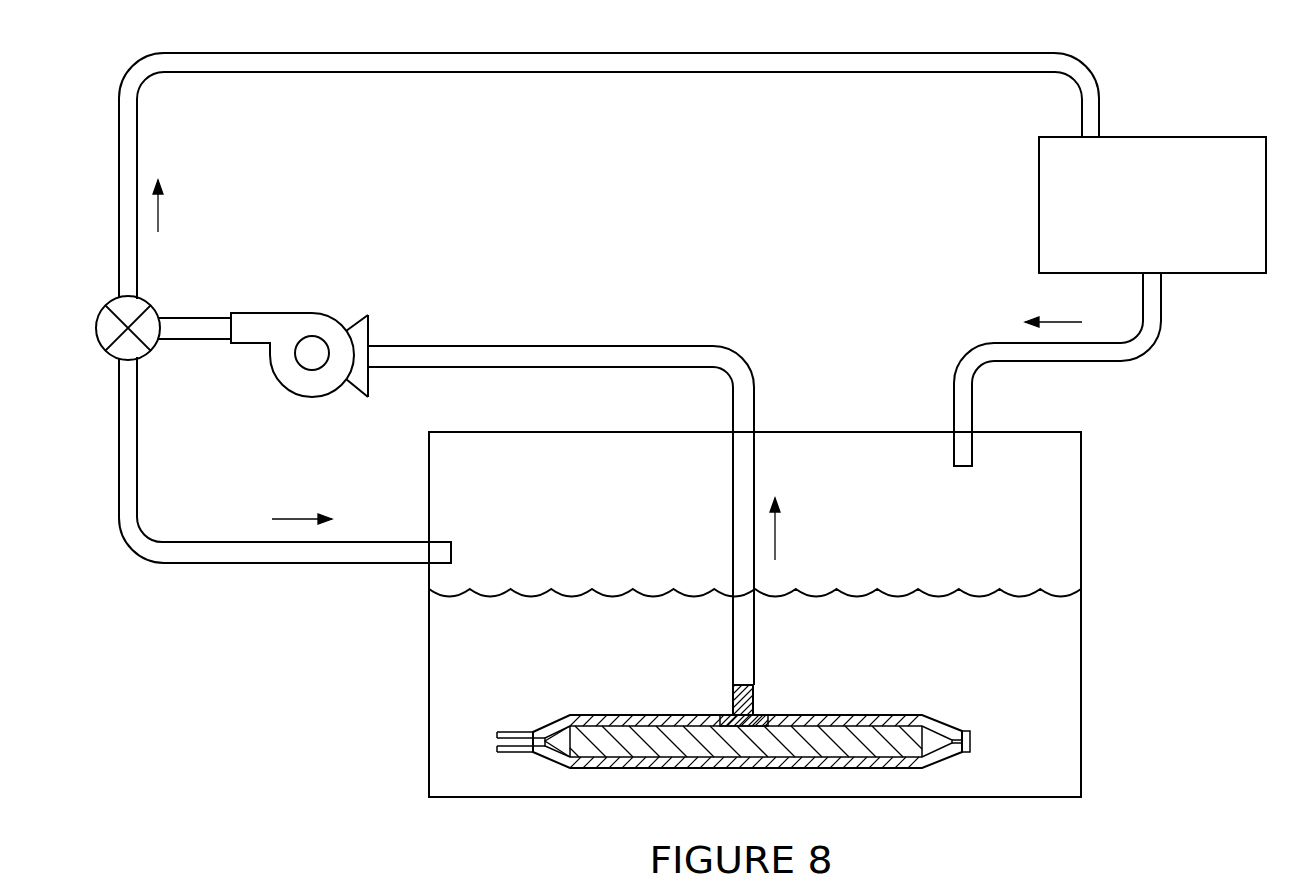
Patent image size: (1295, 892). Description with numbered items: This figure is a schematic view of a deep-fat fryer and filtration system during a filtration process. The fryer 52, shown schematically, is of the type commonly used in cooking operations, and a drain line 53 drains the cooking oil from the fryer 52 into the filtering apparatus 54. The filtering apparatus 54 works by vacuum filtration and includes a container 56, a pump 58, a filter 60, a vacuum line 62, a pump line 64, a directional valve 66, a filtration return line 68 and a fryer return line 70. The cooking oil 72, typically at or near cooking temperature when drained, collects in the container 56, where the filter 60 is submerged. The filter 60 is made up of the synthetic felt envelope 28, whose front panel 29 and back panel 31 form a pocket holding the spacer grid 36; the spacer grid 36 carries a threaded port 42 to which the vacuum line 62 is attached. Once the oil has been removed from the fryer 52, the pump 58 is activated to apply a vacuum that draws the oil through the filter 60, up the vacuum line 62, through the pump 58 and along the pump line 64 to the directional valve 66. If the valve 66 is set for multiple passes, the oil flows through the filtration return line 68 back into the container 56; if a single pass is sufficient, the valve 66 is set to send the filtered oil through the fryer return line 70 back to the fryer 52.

The filter envelope 28 is at (975, 734).
The front panel 29 is at (600, 711).
The back panel 31 is at (842, 770).
The spacer grid 36 is at (622, 752).
The threaded port 42 is at (752, 682).
The fryer 52 is at (1211, 133).
The drain line 53 is at (1164, 297).
The filtering apparatus 54 is at (300, 700).
The container 56 is at (1085, 458).
The pump 58 is at (330, 310).
The filter 60 is at (953, 661).
The vacuum line 62 is at (733, 623).
The pump line 64 is at (181, 309).
The directional valve 66 is at (154, 354).
The filtration return line 68 is at (138, 450).
The fryer return line 70 is at (739, 52).
The cooking oil 72 is at (452, 667).